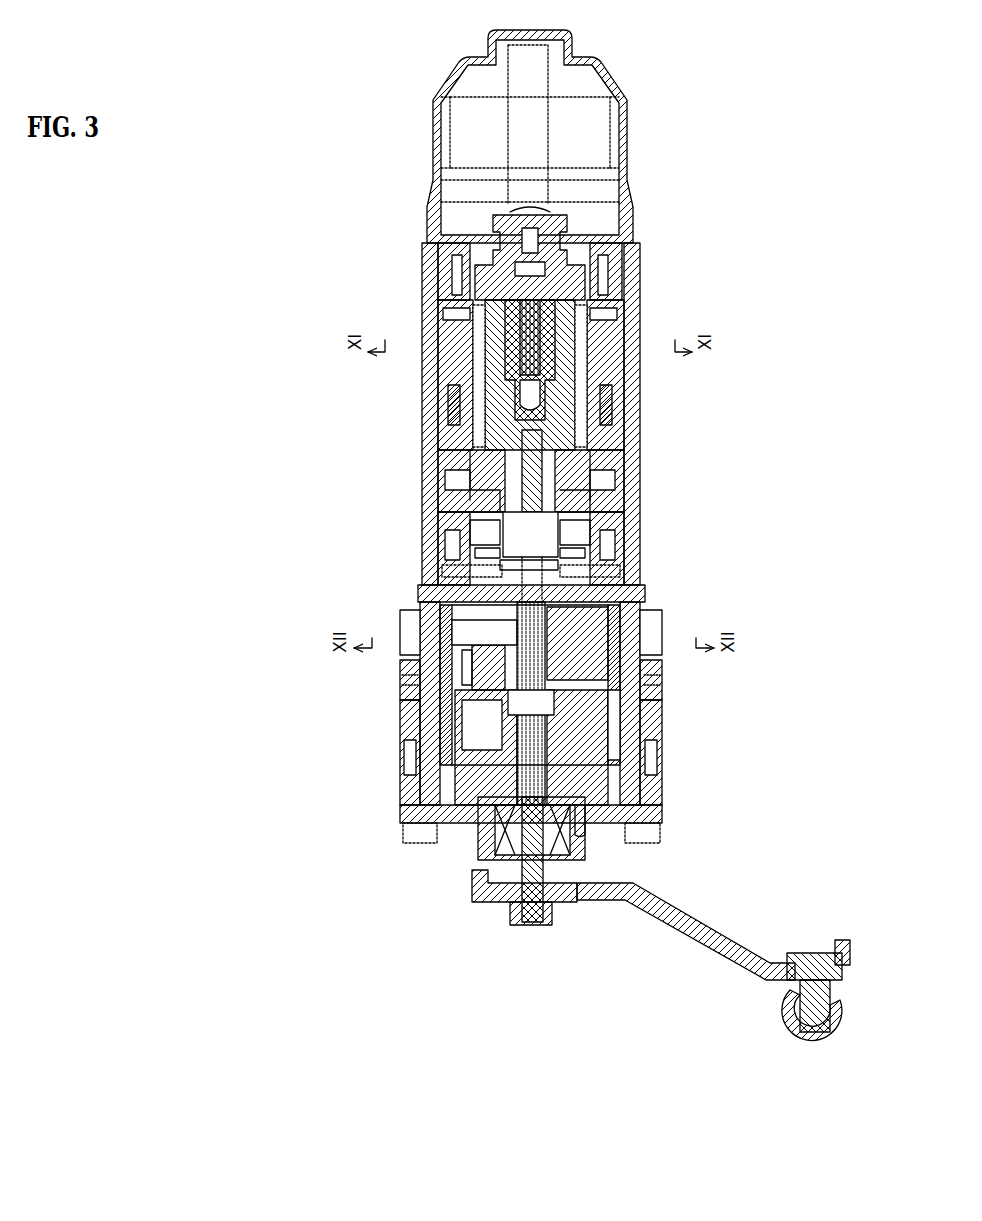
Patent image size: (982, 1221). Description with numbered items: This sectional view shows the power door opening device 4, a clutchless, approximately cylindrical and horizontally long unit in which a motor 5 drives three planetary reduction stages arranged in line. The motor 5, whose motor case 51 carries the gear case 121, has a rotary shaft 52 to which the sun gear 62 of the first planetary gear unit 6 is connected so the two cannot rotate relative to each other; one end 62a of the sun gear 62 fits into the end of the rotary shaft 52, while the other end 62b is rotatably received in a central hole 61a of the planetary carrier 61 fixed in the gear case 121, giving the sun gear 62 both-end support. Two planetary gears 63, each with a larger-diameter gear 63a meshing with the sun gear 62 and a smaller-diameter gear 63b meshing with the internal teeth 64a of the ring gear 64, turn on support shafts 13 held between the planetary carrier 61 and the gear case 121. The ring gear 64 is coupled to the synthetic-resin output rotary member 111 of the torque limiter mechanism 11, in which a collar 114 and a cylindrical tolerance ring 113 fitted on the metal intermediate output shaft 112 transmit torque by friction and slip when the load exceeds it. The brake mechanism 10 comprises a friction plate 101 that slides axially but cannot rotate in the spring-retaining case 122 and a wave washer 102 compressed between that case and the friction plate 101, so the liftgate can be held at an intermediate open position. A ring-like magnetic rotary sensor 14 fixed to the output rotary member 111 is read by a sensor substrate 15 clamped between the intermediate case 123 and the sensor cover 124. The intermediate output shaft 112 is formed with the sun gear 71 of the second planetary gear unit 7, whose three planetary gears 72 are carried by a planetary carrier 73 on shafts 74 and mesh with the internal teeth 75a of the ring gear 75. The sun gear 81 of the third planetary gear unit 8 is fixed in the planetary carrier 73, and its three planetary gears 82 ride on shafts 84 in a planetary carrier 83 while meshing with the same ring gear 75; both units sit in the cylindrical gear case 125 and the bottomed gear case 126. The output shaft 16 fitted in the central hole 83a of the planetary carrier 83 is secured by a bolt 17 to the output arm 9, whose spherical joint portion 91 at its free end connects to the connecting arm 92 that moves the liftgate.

The power door opening device 4 is at (308, 300).
The motor 5 is at (442, 78).
The cap body 51 is at (433, 115).
The rotary shaft 52 is at (515, 192).
The first planetary gear unit 6 is at (430, 338).
The second planetary gear unit 7 is at (663, 610).
The third planetary gear unit 8 is at (420, 720).
The output arm 9 is at (679, 930).
The brake mechanism 10 is at (643, 456).
The torque limiter mechanism 11 is at (642, 515).
The support shaft 13 is at (445, 280).
The magnetic rotary sensor 14 is at (425, 572).
The sensor substrate 15 is at (420, 590).
The output shaft 16 is at (585, 838).
The bolt 17 is at (553, 912).
The planetary carrier 61 is at (422, 425).
The central hole 61a is at (642, 348).
The sun gear 62 is at (480, 337).
The one end of the sun gear 62a is at (545, 240).
The other end of the sun gear 62b is at (641, 340).
The planetary gear 63 is at (423, 338).
The larger-diameter gear 63a is at (422, 365).
The smaller-diameter gear 63b is at (422, 395).
The ring gear 64 is at (641, 420).
The internal teeth 64a is at (422, 410).
The sun gear 71 is at (423, 617).
The planetary gear 72 is at (640, 640).
The planetary carrier 73 is at (667, 680).
The shaft 74 is at (653, 647).
The ring gear 75 is at (663, 735).
The internal teeth 75a is at (455, 735).
The sun gear 81 is at (470, 827).
The planetary gear 82 is at (663, 748).
The planetary carrier 83 is at (670, 768).
The central hole 83a is at (582, 833).
The shaft 84 is at (665, 750).
The spherical joint portion 91 is at (832, 1006).
The connecting arm 92 is at (780, 1022).
The friction plate 101 is at (642, 447).
The wave washer 102 is at (422, 465).
The output rotary member 111 is at (428, 510).
The intermediate output shaft 112 is at (642, 528).
The tolerance ring 113 is at (641, 540).
The collar 114 is at (642, 490).
The gear case 121 is at (428, 252).
The spring-retaining case 122 is at (641, 505).
The intermediate case 123 is at (641, 553).
The sensor cover 124 is at (647, 593).
The gear case 125 is at (400, 680).
The gear case 126 is at (400, 758).